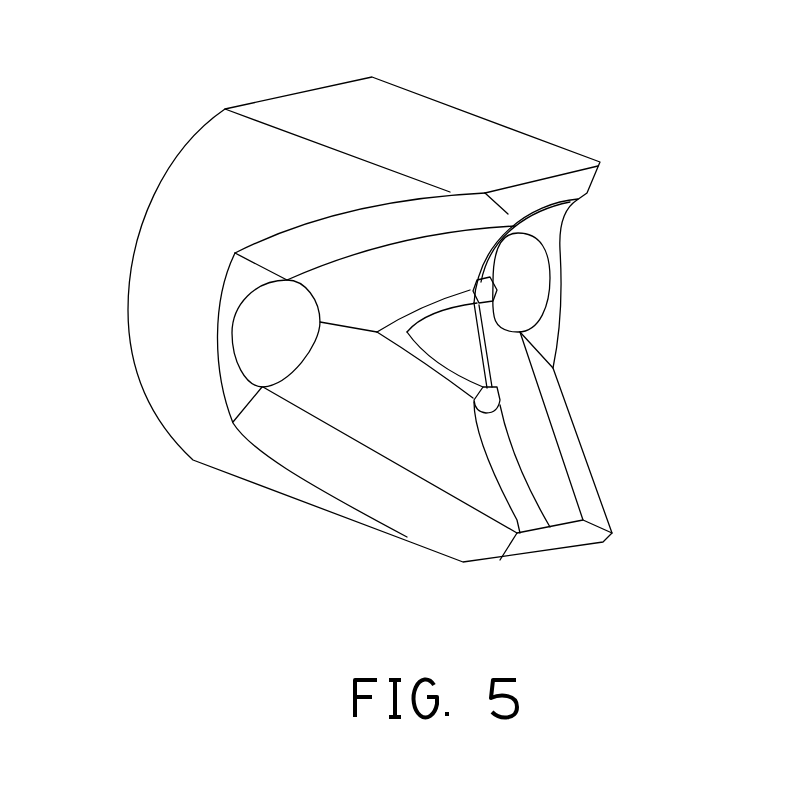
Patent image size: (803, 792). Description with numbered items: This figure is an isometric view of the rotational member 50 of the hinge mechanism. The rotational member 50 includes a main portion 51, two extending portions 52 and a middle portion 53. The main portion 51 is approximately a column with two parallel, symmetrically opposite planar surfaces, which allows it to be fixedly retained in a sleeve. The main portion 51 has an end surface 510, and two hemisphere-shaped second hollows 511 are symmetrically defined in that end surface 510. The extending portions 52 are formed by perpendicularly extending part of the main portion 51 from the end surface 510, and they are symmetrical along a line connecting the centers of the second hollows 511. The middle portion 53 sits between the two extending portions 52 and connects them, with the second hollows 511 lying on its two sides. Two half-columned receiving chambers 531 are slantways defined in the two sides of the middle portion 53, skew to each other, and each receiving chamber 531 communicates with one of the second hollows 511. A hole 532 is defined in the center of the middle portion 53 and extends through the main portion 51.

The rotational member 50 is at (522, 110).
The main portion 51 is at (323, 103).
The extending portions 52 is at (440, 525).
The middle portion 53 is at (497, 438).
The end surface 510 is at (237, 387).
The second hollows 511 is at (270, 327).
The receiving chambers 531 is at (393, 277).
The hole 532 is at (450, 337).